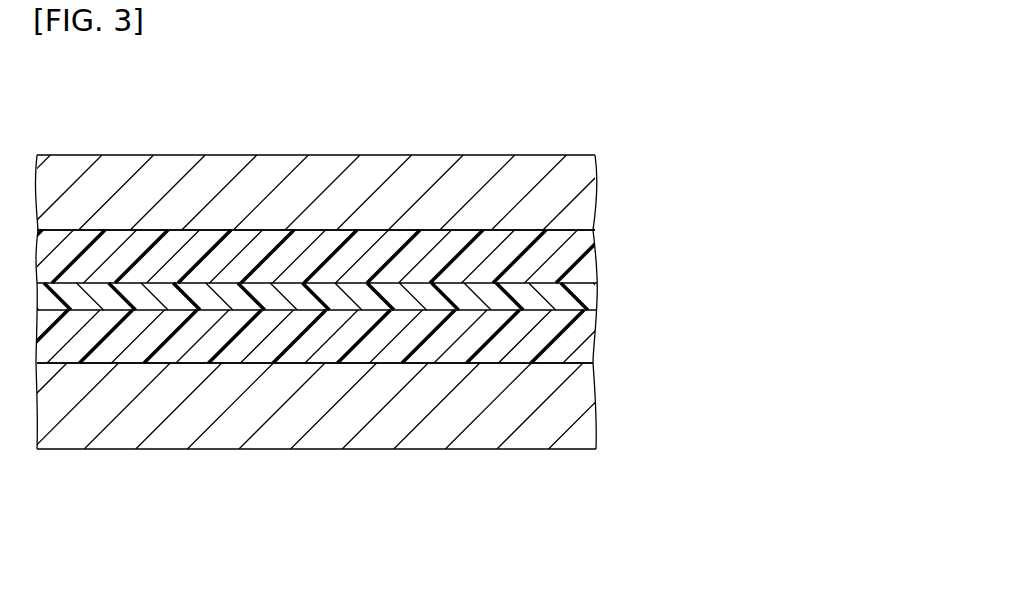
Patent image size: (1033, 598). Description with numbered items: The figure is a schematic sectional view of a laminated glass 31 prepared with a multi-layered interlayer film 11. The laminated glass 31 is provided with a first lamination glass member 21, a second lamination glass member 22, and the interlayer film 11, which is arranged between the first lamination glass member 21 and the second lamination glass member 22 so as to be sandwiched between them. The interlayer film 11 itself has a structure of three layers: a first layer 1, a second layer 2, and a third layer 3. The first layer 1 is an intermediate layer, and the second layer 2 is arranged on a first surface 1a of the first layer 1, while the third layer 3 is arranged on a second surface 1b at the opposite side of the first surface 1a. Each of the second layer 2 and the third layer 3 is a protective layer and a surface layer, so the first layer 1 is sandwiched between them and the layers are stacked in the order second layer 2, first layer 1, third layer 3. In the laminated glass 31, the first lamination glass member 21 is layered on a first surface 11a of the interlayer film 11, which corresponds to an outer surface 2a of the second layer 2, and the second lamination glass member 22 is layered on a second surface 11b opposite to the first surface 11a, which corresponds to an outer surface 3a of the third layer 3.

The laminated glass 31 is at (158, 115).
The second lamination glass member 22 is at (597, 187).
The first lamination glass member 21 is at (597, 392).
The interlayer film 11 is at (246, 222).
The first surface 11a is at (328, 365).
The second surface 11b is at (328, 229).
The first layer 1 is at (605, 297).
The first surface 1a is at (408, 311).
The second surface 1b is at (407, 282).
The second layer 2 is at (605, 337).
The outer surface 2a is at (518, 364).
The third layer 3 is at (605, 257).
The outer surface 3a is at (523, 229).